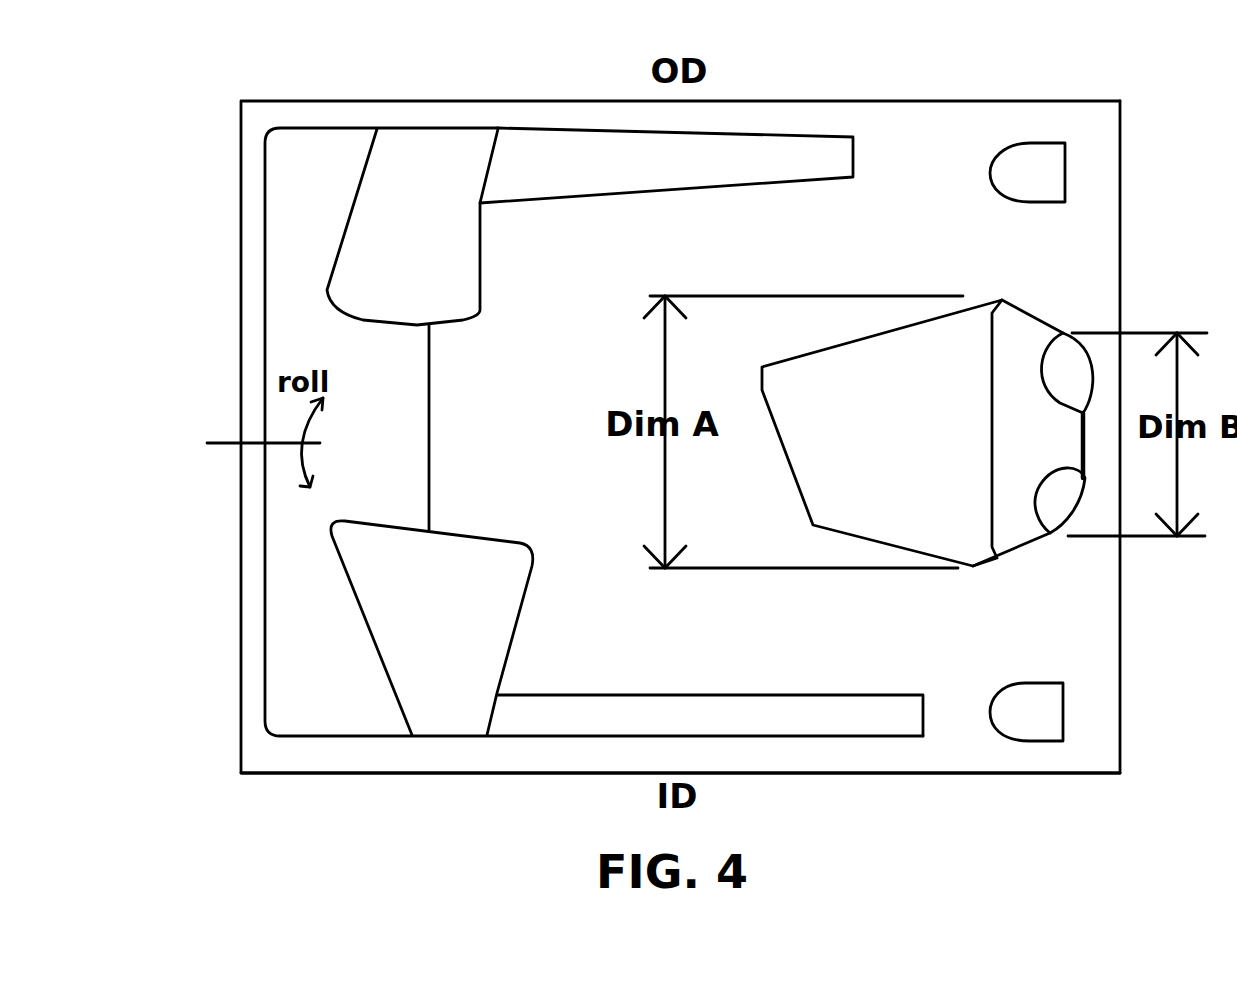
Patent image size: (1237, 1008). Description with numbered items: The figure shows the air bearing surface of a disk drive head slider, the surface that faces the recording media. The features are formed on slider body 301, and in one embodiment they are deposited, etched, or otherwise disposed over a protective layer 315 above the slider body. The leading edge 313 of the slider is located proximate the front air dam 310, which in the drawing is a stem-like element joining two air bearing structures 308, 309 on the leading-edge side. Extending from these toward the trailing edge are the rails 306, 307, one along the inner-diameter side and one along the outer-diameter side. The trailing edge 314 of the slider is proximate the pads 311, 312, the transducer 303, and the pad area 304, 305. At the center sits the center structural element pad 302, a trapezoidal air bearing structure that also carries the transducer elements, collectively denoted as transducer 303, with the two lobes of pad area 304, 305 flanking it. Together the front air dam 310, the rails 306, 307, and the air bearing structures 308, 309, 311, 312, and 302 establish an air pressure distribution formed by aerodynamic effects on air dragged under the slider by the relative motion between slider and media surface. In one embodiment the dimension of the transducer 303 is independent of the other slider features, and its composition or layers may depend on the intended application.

The slider body 301 is at (430, 777).
The center structural element pad 302 is at (930, 462).
The transducer 303 is at (1097, 430).
The pad area 304 is at (1068, 372).
The pad area 305 is at (1062, 502).
The rail 306 is at (717, 713).
The rail 307 is at (730, 160).
The air bearing structure 308 is at (450, 618).
The air bearing structure 309 is at (440, 248).
The front air dam 310 is at (367, 432).
The pad 311 is at (1045, 167).
The pad 312 is at (1045, 717).
The leading edge 313 is at (228, 452).
The trailing edge 314 is at (1123, 260).
The protective layer 315 is at (973, 755).